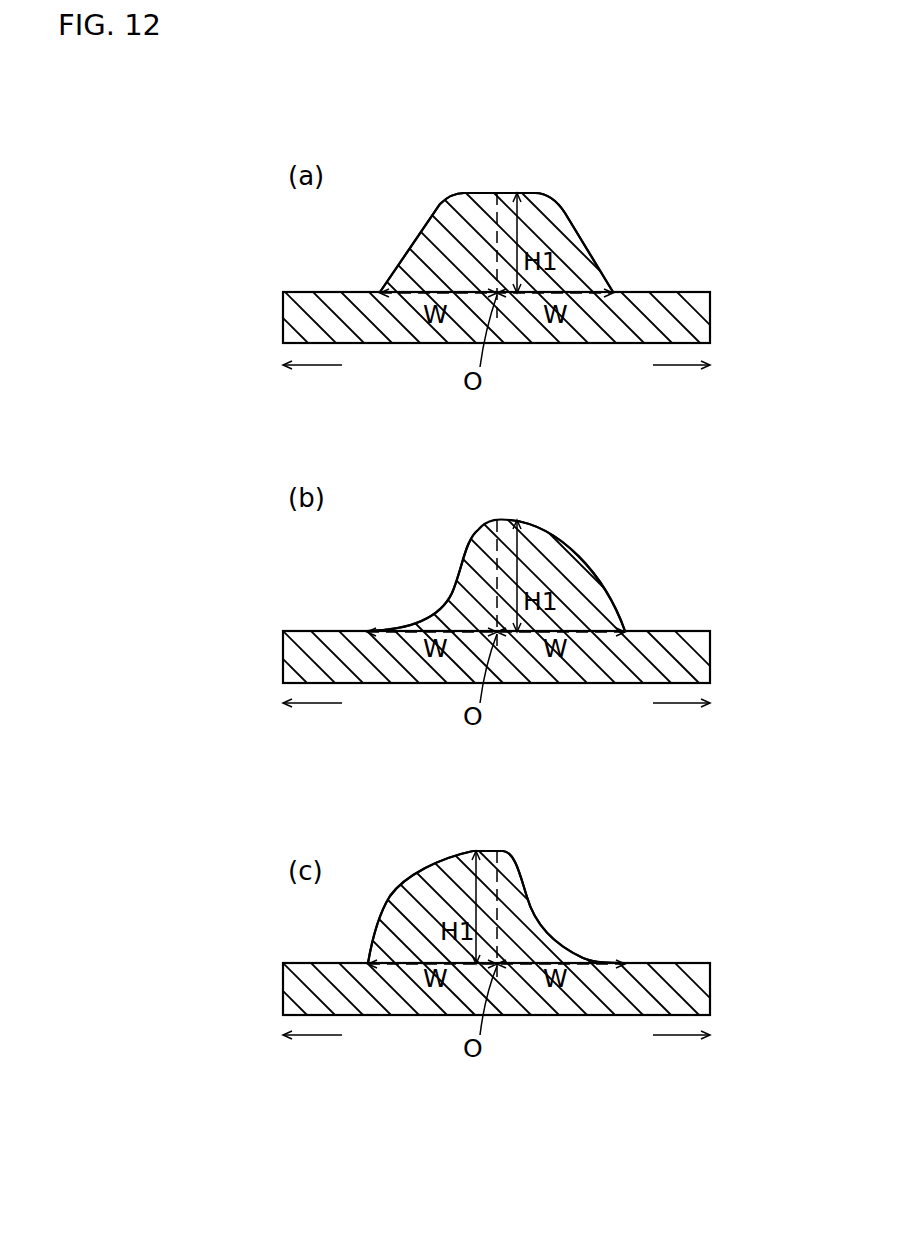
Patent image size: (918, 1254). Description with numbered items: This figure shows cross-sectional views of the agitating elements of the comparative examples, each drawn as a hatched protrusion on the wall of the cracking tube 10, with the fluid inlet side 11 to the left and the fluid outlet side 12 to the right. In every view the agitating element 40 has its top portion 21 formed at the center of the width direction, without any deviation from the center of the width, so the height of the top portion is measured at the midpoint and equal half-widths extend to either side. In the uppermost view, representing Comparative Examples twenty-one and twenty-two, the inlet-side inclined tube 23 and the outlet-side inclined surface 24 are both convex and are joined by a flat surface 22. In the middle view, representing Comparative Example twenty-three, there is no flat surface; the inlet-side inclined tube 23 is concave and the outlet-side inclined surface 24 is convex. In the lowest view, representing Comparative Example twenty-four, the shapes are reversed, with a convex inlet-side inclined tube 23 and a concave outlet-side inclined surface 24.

The cracking tube 10 is at (693, 303).
The fluid inlet side 11 is at (333, 702).
The fluid outlet side 12 is at (665, 696).
The top portion 21 is at (497, 193).
The flat surface 22 is at (472, 192).
The inlet-side inclined tube 23 is at (410, 240).
The outlet-side inclined surface 24 is at (567, 220).
The agitating element 40 is at (458, 225).